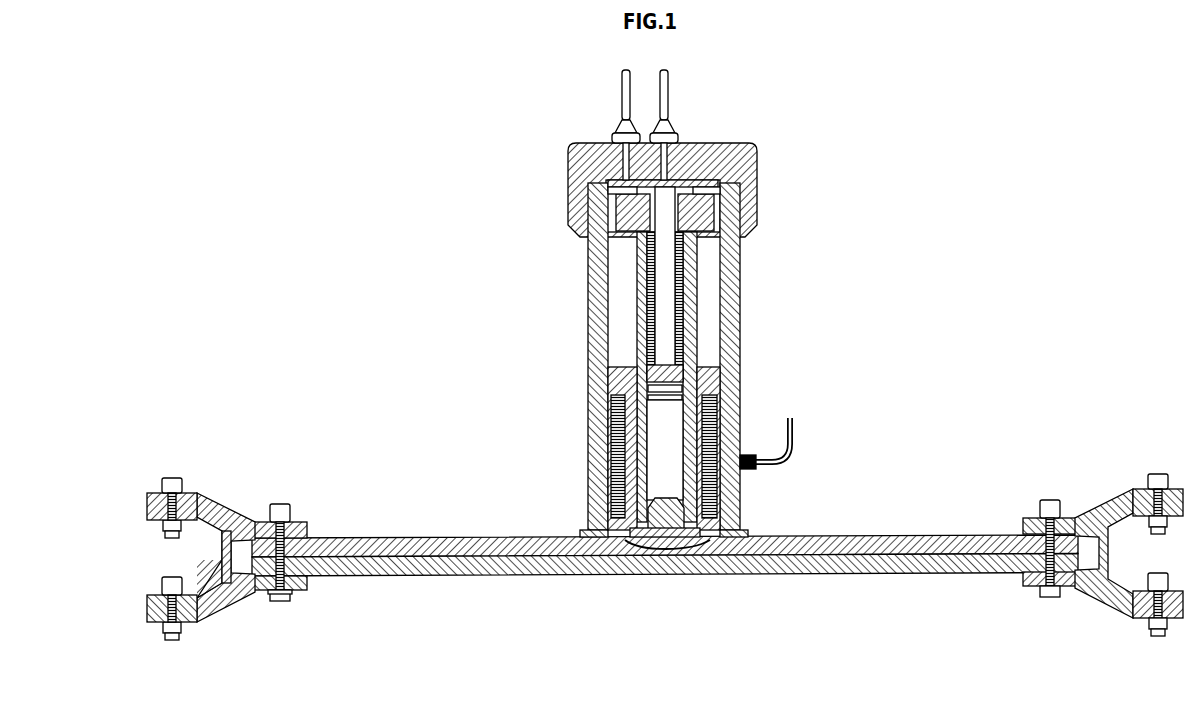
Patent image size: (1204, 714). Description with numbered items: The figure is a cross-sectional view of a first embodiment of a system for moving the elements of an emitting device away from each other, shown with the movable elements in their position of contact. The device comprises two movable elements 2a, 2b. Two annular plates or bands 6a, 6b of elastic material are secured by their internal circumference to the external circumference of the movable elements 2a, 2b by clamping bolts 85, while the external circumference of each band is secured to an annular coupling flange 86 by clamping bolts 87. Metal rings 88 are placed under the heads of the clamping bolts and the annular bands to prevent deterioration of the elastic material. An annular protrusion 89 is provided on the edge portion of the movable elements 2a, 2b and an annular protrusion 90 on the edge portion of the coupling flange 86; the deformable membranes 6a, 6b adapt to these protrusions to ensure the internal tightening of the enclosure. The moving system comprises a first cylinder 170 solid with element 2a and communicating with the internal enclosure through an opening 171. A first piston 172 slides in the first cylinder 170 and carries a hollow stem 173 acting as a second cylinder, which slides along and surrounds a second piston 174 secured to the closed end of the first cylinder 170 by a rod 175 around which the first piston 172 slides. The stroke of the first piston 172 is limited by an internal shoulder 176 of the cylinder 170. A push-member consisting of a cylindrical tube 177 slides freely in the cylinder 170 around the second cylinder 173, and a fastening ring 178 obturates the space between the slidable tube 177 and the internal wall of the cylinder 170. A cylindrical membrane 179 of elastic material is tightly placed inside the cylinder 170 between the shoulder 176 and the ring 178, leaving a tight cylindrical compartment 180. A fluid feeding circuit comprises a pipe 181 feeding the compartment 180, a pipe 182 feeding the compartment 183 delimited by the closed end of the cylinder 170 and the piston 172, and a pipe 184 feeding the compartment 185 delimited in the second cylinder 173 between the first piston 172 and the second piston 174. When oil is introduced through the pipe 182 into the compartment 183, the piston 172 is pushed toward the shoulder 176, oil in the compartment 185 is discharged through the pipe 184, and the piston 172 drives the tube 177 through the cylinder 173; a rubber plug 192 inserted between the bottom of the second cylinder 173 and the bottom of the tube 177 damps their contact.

The movable element 2a is at (373, 537).
The movable element 2b is at (380, 577).
The annular band of elastic material 6a is at (223, 517).
The annular band of elastic material 6b is at (224, 623).
The clamping bolt 85 is at (279, 504).
The annular coupling flange 86 is at (222, 557).
The clamping bolt 87 is at (170, 480).
The metal ring 88 is at (192, 496).
The annular protrusion 89 is at (302, 521).
The annular protrusion 90 is at (152, 495).
The first cylinder 170 is at (598, 277).
The opening 171 is at (696, 576).
The first piston 172 is at (760, 205).
The hollow stem 173 is at (742, 237).
The second piston 174 is at (630, 378).
The rod 175 is at (663, 318).
The internal shoulder 176 is at (705, 362).
The cylindrical tube 177 is at (697, 283).
The fastening ring 178 is at (622, 576).
The cylindrical membrane 179 is at (612, 410).
The cylindrical compartment 180 is at (712, 406).
The pipe 181 is at (795, 437).
The pipe 182 is at (617, 129).
The compartment 183 is at (606, 183).
The pipe 184 is at (672, 128).
The compartment 185 is at (637, 240).
The rubber plug 192 is at (662, 576).